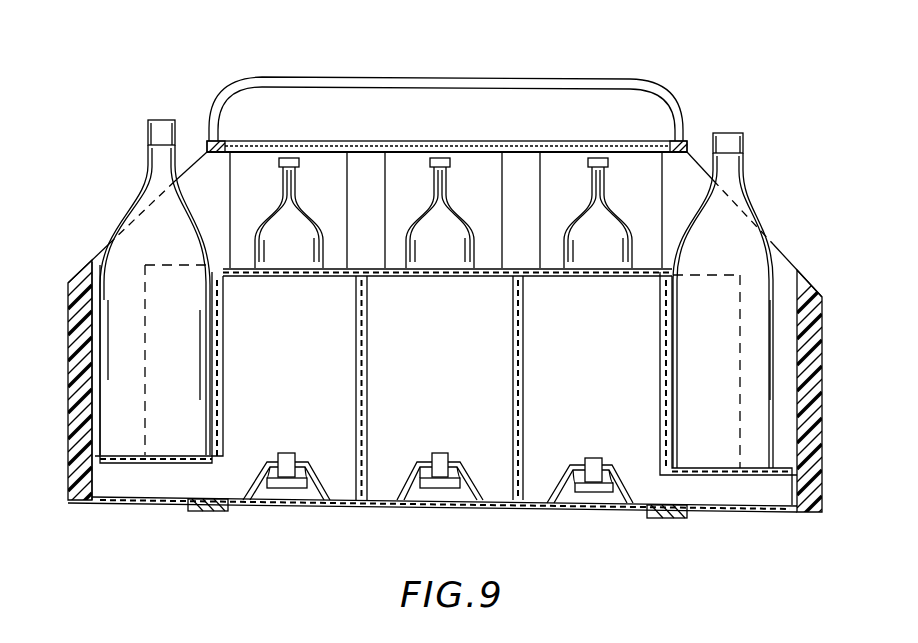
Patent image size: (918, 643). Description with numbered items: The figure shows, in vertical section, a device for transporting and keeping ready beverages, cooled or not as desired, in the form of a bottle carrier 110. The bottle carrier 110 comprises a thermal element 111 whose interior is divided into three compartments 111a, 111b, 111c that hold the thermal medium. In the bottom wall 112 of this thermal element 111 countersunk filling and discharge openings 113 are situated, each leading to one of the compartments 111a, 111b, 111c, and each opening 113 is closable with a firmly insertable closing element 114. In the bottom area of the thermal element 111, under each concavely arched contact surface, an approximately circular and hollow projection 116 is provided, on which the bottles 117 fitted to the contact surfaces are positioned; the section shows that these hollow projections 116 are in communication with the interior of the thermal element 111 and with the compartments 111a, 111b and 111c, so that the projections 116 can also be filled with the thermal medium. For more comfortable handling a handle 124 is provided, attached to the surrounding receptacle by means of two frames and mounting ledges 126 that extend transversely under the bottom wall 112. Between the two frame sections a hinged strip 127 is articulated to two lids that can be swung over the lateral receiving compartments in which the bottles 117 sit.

The bottle carrier 110 is at (672, 74).
The thermal element 111 is at (245, 387).
The compartment 111a is at (310, 368).
The compartment 111b is at (464, 368).
The compartment 111c is at (614, 368).
The bottom wall 112 is at (728, 508).
The filling and discharge opening 113 is at (268, 474).
The closing element 114 is at (299, 484).
The hollow projection 116 is at (121, 483).
The bottle 117 is at (158, 170).
The handle 124 is at (394, 78).
The mounting ledge 126 is at (215, 509).
The hinged strip 127 is at (440, 140).